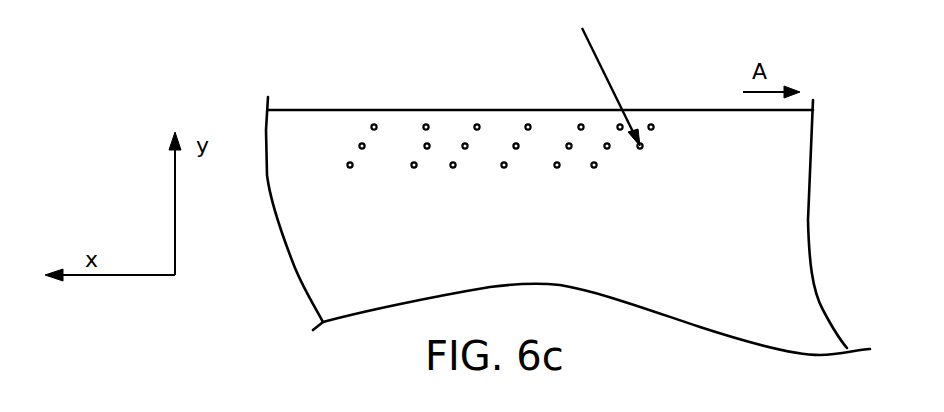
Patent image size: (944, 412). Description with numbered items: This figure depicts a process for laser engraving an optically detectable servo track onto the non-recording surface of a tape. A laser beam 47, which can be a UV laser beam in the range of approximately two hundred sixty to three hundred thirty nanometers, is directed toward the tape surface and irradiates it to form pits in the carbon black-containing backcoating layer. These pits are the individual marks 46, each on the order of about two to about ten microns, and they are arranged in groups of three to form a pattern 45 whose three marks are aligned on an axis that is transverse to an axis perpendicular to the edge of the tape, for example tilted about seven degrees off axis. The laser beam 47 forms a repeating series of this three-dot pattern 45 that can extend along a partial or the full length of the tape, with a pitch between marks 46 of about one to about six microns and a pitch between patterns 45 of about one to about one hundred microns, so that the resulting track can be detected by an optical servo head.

The pattern 45 is at (377, 125).
The marks 46 is at (359, 146).
The laser beam 47 is at (586, 41).